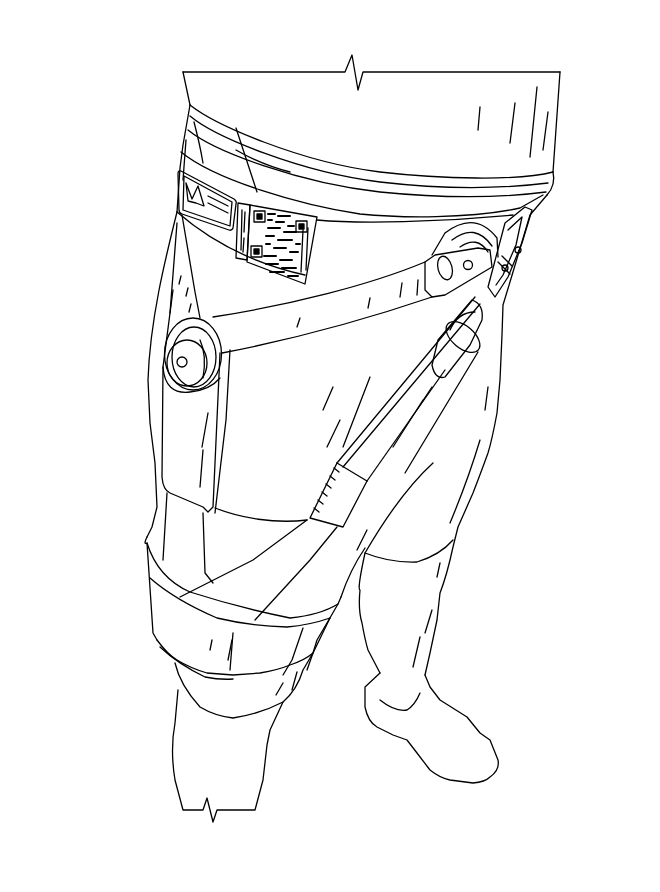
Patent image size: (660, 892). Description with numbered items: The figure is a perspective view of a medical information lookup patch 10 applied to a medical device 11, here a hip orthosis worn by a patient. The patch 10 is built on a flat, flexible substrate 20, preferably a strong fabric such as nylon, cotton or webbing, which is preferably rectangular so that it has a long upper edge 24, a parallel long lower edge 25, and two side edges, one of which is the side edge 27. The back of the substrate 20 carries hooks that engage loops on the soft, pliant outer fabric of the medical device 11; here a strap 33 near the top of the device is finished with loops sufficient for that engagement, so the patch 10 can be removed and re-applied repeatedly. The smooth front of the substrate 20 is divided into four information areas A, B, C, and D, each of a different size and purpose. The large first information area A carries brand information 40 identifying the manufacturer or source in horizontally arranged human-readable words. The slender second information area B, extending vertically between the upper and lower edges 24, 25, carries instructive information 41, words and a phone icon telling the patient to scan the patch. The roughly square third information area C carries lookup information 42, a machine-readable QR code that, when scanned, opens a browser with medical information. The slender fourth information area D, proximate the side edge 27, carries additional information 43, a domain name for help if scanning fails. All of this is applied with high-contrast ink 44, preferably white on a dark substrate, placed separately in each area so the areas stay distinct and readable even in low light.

The medical information lookup patch 10 is at (176, 183).
The medical device 11 is at (150, 426).
The substrate 20 is at (320, 227).
The upper edge 24 is at (256, 191).
The lower edge 25 is at (203, 248).
The side edge 27 is at (315, 255).
The strap 33 is at (520, 257).
The brand information 40 is at (175, 210).
The instructive information 41 is at (238, 268).
The lookup information 42 is at (268, 272).
The additional information 43 is at (297, 290).
The ink 44 is at (181, 166).
The first information area A is at (204, 163).
The second information area B is at (287, 200).
The third information area C is at (313, 203).
The fourth information area D is at (338, 217).